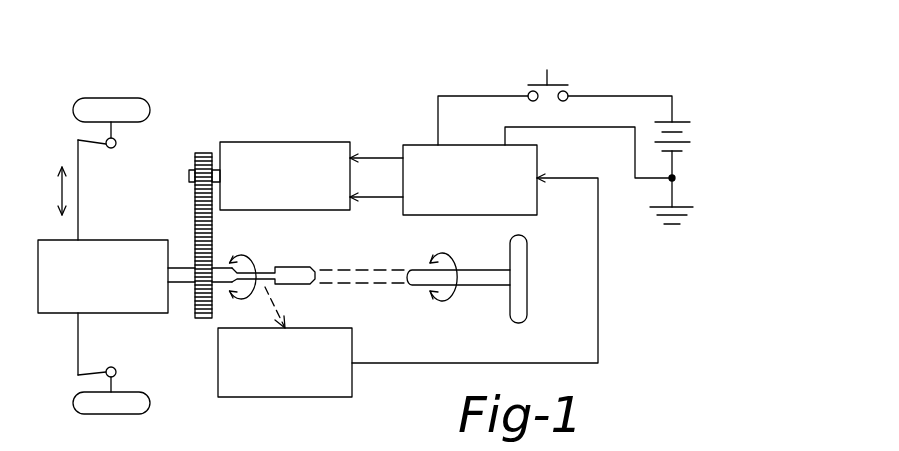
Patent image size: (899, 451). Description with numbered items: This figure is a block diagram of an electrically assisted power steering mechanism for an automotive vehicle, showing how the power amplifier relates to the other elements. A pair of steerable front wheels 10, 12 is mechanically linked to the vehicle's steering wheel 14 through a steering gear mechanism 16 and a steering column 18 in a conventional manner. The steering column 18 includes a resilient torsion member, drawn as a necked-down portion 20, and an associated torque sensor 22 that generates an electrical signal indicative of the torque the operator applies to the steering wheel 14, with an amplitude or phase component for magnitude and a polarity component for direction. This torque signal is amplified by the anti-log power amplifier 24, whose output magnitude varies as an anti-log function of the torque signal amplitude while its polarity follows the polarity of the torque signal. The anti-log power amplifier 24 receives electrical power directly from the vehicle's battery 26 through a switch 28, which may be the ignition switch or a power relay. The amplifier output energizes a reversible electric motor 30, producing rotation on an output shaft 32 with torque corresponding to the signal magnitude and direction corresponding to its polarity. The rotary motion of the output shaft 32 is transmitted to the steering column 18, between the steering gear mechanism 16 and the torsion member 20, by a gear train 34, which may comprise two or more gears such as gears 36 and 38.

The steerable front wheel 10 is at (77, 98).
The steerable front wheel 12 is at (72, 405).
The steering wheel 14 is at (530, 300).
The steering gear mechanism 16 is at (113, 313).
The steering column 18 is at (475, 280).
The torsion member 20 is at (262, 273).
The torque sensor 22 is at (305, 328).
The anti-log power amplifier 24 is at (418, 145).
The battery 26 is at (673, 120).
The switch 28 is at (552, 80).
The reversible electric motor 30 is at (311, 100).
The output shaft 32 is at (190, 173).
The gear train 34 is at (183, 213).
The gear 36 is at (203, 153).
The gear 38 is at (211, 252).